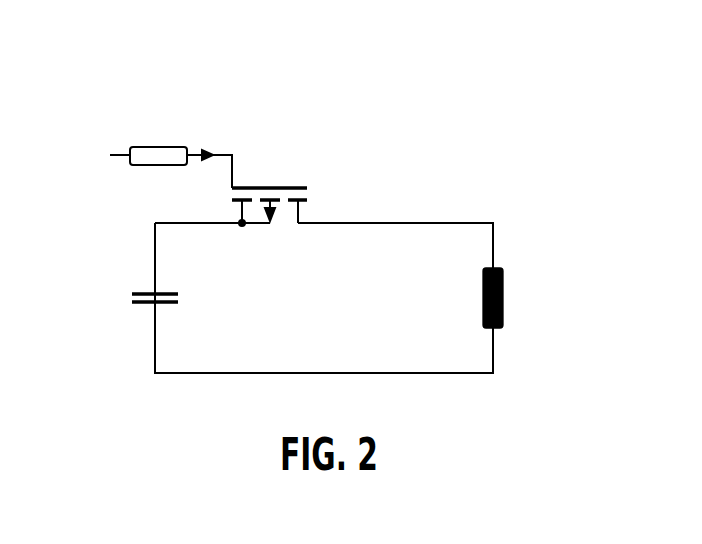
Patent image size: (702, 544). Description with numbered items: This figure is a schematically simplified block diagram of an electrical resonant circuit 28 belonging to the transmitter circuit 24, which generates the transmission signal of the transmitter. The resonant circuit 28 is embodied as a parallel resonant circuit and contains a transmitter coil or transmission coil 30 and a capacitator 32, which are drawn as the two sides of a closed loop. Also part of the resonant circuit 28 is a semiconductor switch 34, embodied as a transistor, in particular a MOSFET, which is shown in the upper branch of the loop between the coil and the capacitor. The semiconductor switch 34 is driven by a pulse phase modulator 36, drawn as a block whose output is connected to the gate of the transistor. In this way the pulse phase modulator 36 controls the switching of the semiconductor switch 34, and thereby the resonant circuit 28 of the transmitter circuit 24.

The transmitter circuit 24 is at (417, 197).
The electrical resonant circuit 28 is at (324, 298).
The transmission coil 30 is at (503, 300).
The capacitator 32 is at (147, 292).
The semiconductor switch 34 is at (266, 184).
The pulse phase modulator 36 is at (155, 147).